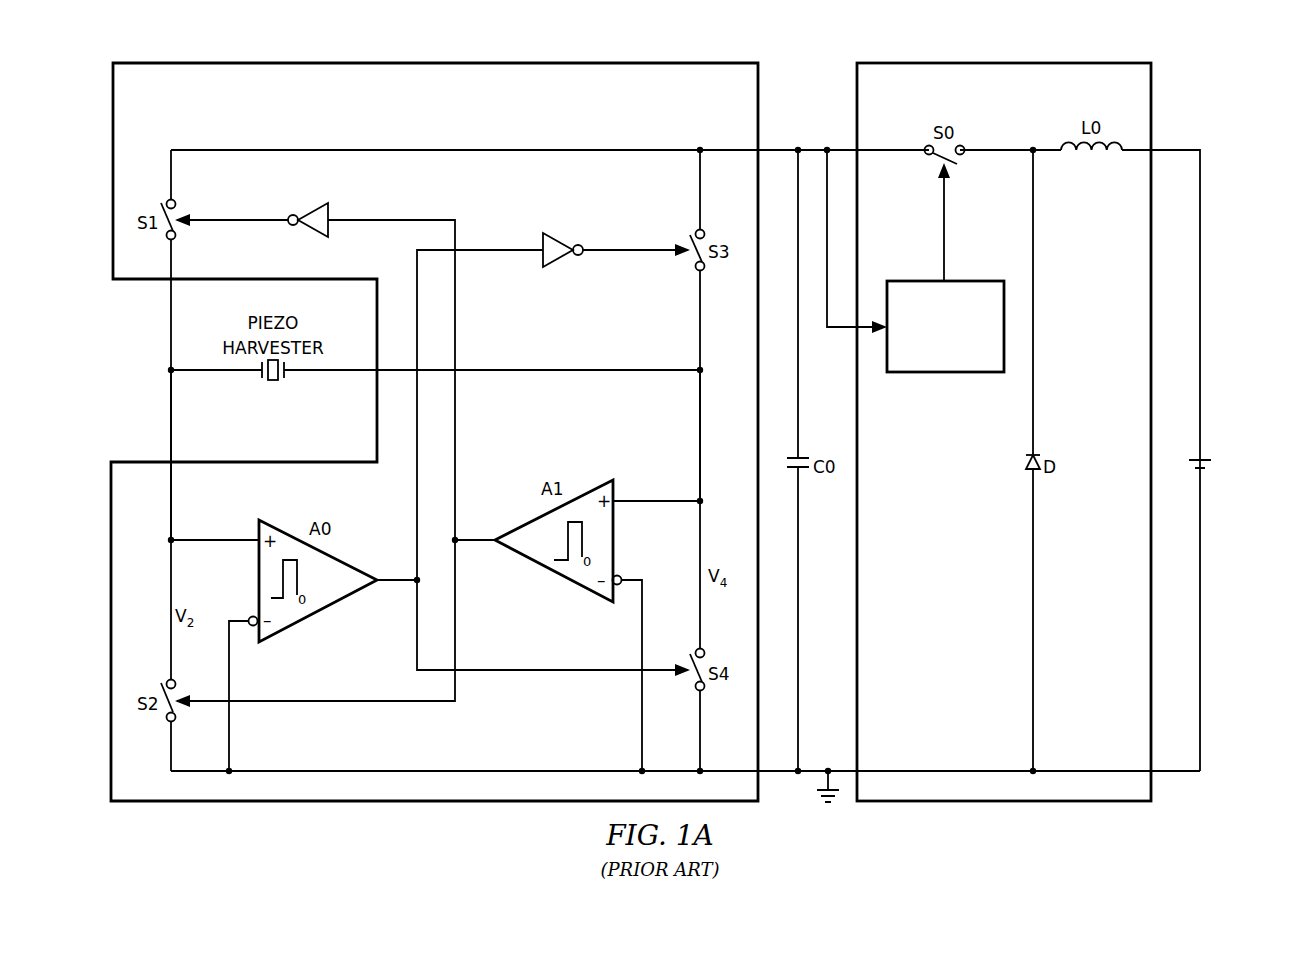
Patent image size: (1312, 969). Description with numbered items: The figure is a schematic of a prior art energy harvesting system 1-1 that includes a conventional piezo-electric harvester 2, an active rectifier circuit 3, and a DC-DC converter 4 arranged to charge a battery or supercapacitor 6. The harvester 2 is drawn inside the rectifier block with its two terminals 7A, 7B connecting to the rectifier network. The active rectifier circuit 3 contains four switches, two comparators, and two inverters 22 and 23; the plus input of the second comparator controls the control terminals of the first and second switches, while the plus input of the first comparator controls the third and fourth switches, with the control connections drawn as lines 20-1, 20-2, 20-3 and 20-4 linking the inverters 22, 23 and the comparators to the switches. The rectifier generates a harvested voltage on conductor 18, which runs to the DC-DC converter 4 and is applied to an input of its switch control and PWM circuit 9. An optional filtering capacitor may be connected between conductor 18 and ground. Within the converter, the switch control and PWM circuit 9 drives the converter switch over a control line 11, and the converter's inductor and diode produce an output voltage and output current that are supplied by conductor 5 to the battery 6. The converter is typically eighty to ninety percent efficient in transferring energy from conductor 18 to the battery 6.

The energy harvesting system 1-1 is at (1252, 250).
The piezo-electric harvester 2 is at (273, 382).
The active rectifier circuit 3 is at (366, 808).
The DC-DC converter 4 is at (1015, 808).
The conductor 5 is at (1175, 150).
The battery or supercapacitor 6 is at (1214, 462).
The first piezo harvester terminal 7A is at (233, 375).
The second piezo harvester terminal 7B is at (313, 375).
The switch control and PWM circuit 9 is at (948, 372).
The switch control line 11 is at (945, 238).
The conductor 18 is at (267, 150).
The switch S1 control line 20-1 is at (240, 220).
The comparator A1 input line 20-2 is at (462, 540).
The switch S3 control line 20-3 is at (641, 250).
The comparator A0 output line 20-4 is at (410, 584).
The inverter 22 is at (310, 214).
The inverter 23 is at (560, 243).